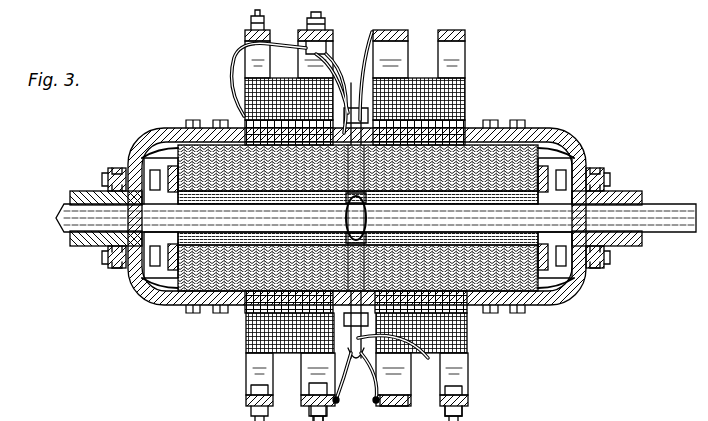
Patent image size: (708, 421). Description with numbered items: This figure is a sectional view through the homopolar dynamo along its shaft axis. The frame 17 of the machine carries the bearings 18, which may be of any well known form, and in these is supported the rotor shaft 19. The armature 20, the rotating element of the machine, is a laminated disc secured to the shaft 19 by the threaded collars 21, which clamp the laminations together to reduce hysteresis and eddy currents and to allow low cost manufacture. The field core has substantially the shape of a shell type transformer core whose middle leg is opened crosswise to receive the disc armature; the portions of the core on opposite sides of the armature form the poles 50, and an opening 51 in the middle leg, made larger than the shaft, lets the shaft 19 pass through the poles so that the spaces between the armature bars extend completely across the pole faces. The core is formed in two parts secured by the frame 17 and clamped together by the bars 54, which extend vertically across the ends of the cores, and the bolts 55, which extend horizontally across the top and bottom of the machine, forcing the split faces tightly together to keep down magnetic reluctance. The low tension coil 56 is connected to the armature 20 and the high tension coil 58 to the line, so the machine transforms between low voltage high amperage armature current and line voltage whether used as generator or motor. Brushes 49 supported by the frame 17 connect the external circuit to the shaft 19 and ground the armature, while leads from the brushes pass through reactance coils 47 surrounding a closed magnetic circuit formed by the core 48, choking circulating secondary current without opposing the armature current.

The frame 17 is at (250, 361).
The bearings 18 is at (96, 186).
The rotor shaft 19 is at (650, 214).
The armature 20 is at (348, 75).
The threaded collars 21 is at (455, 300).
The reactance coils 47 is at (383, 413).
The core 48 is at (392, 397).
The brushes 49 is at (110, 246).
The poles 50 is at (418, 128).
The opening 51 is at (492, 190).
The bars 54 is at (165, 157).
The bolts 55 is at (540, 166).
The low tension coil 56 is at (455, 92).
The high tension coil 58 is at (250, 82).